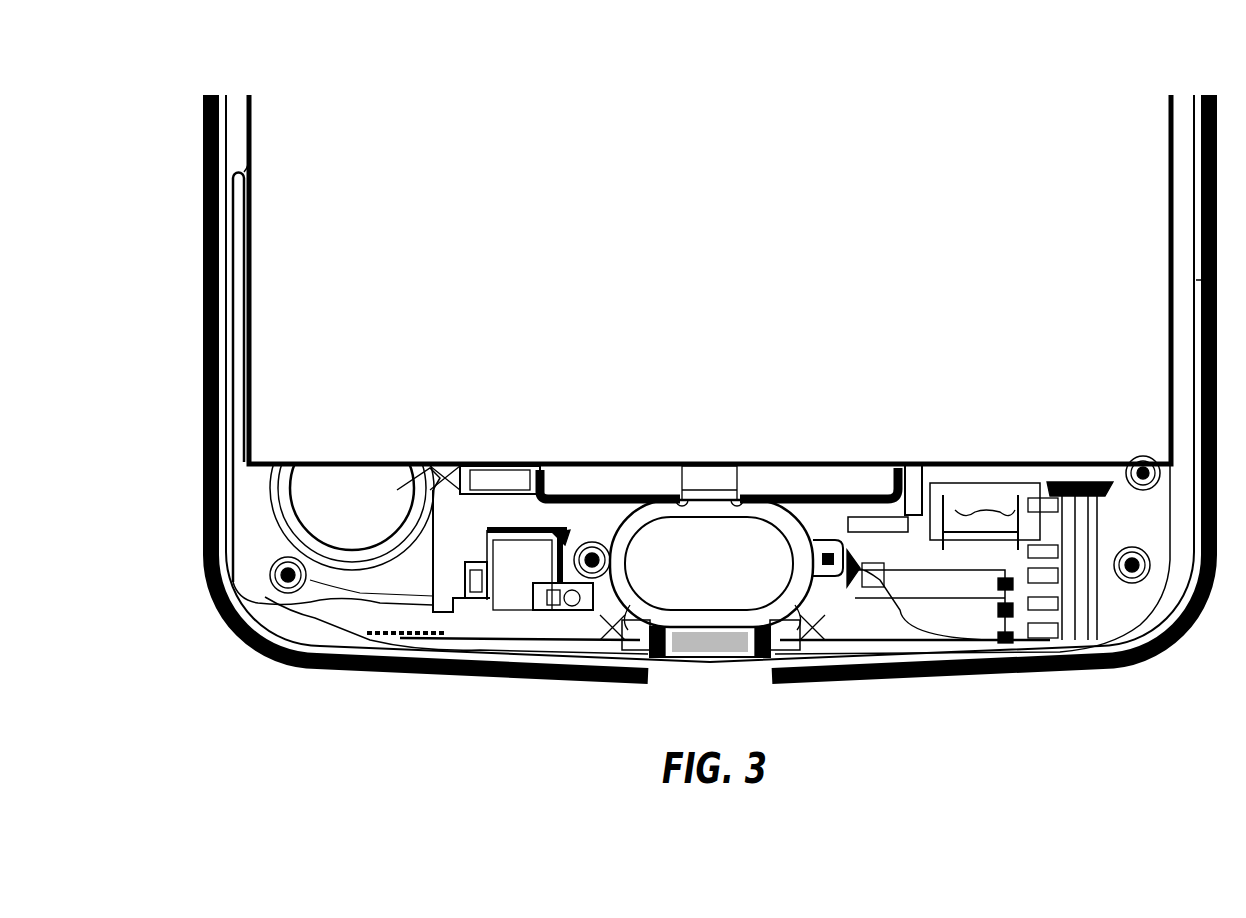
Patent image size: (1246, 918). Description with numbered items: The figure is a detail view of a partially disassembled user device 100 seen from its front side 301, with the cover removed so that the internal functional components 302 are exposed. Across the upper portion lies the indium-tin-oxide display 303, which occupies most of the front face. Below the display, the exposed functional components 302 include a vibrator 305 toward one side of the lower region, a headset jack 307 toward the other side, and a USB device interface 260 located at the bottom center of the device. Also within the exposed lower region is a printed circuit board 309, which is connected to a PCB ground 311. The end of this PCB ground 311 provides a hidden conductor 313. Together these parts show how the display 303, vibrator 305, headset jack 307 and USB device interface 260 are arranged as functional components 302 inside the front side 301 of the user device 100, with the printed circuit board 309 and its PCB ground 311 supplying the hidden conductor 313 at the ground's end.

The user device 100 is at (205, 135).
The front side 301 is at (205, 340).
The ITO display 303 is at (529, 271).
The vibrator 305 is at (350, 507).
The functional components 302 is at (417, 546).
The hidden conductor 313 is at (420, 636).
The printed circuit board 309 is at (453, 530).
The PCB ground 311 is at (553, 533).
The USB device interface 260 is at (750, 652).
The headset jack 307 is at (1040, 578).